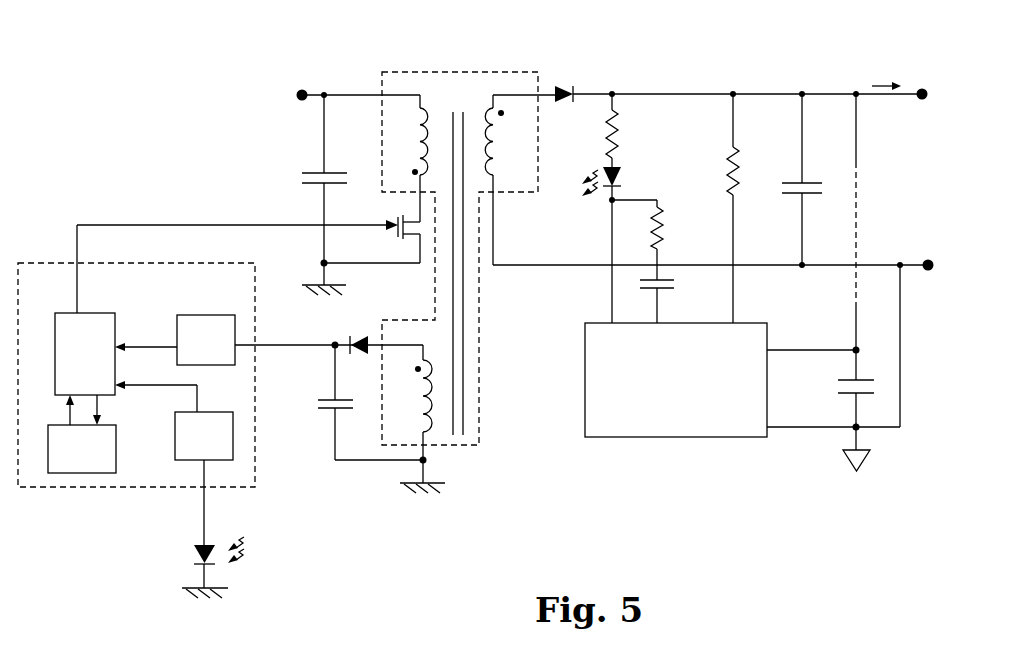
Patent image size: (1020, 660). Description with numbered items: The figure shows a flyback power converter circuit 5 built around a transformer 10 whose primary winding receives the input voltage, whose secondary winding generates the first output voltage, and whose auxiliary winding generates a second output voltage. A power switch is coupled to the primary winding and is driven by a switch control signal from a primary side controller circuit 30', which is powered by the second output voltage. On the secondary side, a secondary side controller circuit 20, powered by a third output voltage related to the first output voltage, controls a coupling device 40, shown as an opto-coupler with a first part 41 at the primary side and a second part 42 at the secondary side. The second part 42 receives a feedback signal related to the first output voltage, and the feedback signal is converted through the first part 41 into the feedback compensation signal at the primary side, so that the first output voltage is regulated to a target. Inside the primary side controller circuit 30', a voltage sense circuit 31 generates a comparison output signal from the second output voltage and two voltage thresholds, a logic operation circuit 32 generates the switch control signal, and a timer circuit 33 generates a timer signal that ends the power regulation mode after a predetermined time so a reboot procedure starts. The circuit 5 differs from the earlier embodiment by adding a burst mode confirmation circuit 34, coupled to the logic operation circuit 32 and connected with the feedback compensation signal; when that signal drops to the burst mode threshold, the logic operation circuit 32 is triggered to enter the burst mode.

The flyback power converter circuit 5 is at (297, 47).
The transformer 10 is at (478, 72).
The primary side controller circuit 30' is at (136, 375).
The voltage sense circuit 31 is at (195, 352).
The logic operation circuit 32 is at (74, 352).
The timer circuit 33 is at (69, 460).
The burst mode confirmation circuit 34 is at (193, 447).
The secondary side controller circuit 20 is at (664, 421).
The coupling device 40 is at (347, 553).
The first part 41 is at (192, 553).
The second part 42 is at (622, 183).